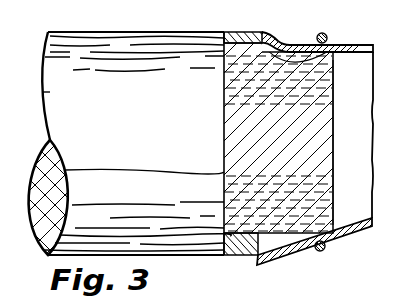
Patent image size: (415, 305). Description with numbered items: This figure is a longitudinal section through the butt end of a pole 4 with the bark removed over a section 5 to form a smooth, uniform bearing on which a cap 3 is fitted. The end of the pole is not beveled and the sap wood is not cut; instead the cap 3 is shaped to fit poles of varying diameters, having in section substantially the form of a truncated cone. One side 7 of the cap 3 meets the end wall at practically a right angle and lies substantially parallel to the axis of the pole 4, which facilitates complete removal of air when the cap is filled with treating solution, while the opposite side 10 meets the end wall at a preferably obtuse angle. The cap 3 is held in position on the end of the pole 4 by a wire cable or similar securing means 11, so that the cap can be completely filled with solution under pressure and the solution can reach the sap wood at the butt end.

The cap 3 is at (363, 82).
The pole 4 is at (347, 132).
The section 5 is at (302, 78).
The side 7 is at (357, 46).
The side 10 is at (357, 238).
The wire cable 11 is at (328, 36).